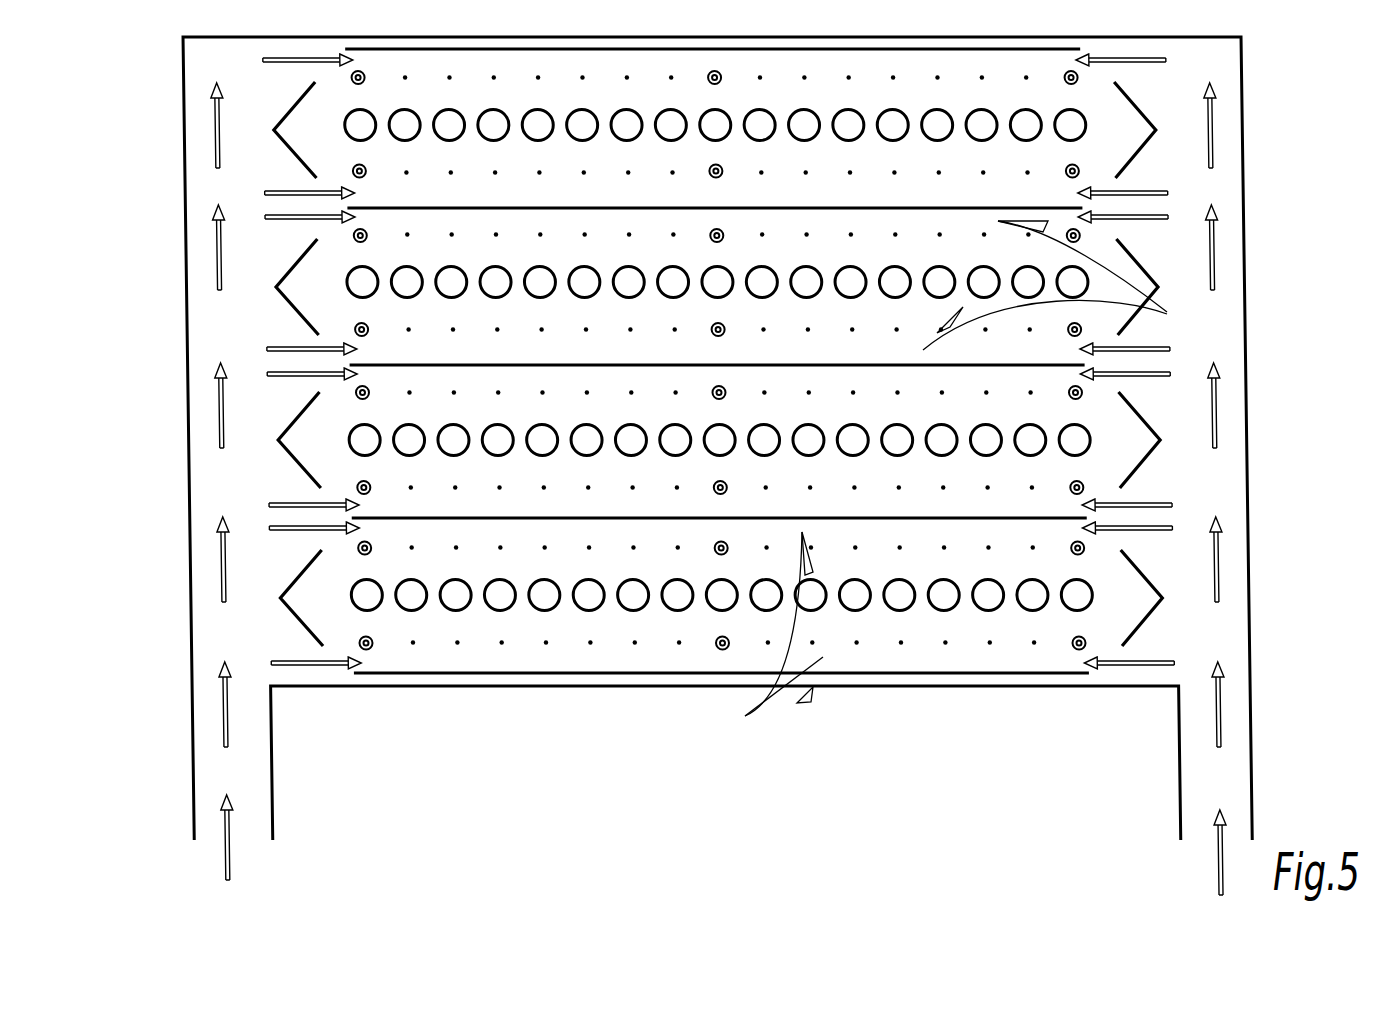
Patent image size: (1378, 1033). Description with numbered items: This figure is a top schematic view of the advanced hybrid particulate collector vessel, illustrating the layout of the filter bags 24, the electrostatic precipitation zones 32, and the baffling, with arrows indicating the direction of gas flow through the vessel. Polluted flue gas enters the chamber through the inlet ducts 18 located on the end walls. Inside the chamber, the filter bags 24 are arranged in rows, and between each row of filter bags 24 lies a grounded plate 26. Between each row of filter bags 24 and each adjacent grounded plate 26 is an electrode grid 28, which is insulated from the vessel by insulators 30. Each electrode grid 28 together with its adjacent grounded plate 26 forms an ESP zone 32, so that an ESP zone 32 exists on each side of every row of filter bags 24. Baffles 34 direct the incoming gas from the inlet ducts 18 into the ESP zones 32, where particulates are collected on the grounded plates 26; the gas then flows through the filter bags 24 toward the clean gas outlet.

The inlet duct 18 is at (270, 778).
The filter bags 24 is at (852, 268).
The grounded plate 26 is at (625, 49).
The electrode grid 28 is at (492, 79).
The insulators 30 is at (352, 163).
The electrostatic precipitation zone 32 is at (954, 477).
The baffles 34 is at (308, 250).